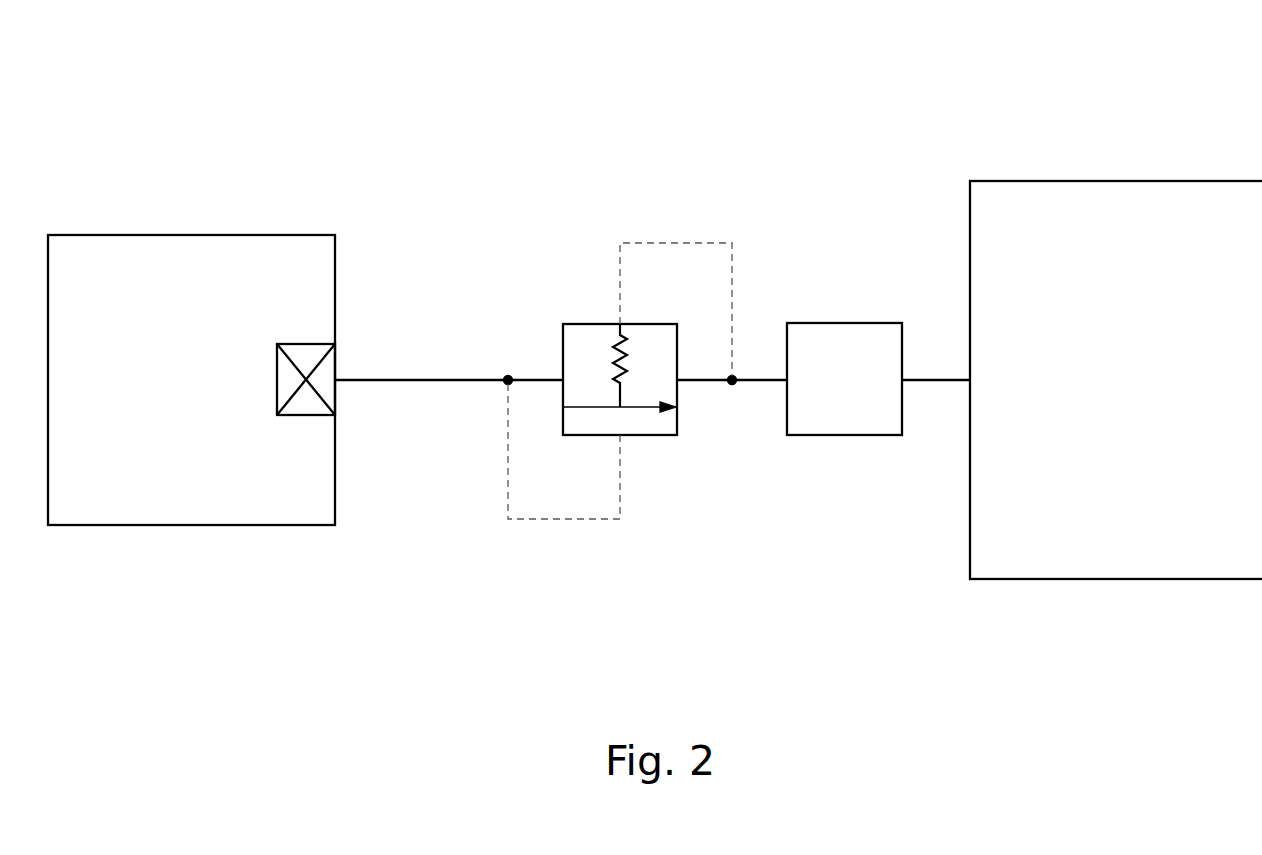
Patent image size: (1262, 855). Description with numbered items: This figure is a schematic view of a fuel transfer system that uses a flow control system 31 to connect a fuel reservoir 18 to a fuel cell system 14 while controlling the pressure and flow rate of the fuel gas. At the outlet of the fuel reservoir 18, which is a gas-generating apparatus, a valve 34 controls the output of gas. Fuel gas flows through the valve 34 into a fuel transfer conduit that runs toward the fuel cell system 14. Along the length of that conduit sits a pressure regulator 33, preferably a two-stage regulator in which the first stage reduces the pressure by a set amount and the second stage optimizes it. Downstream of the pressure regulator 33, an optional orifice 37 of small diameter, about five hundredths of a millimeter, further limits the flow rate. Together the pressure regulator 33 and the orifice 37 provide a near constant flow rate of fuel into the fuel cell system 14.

The fuel cell system 14 is at (1124, 393).
The fuel reservoir 18 is at (174, 393).
The flow control system 31 is at (623, 323).
The pressure regulator 33 is at (646, 437).
The valve 34 is at (322, 376).
The orifice 37 is at (843, 348).